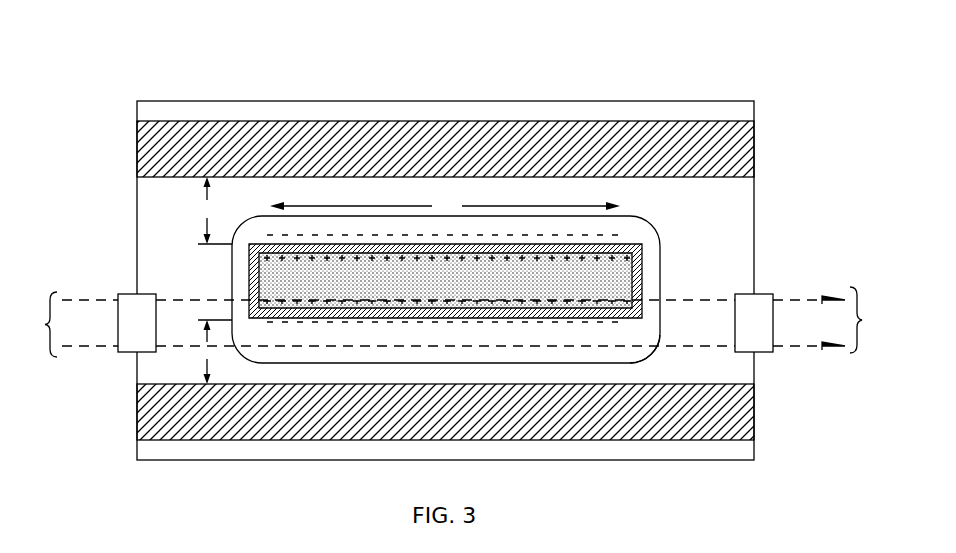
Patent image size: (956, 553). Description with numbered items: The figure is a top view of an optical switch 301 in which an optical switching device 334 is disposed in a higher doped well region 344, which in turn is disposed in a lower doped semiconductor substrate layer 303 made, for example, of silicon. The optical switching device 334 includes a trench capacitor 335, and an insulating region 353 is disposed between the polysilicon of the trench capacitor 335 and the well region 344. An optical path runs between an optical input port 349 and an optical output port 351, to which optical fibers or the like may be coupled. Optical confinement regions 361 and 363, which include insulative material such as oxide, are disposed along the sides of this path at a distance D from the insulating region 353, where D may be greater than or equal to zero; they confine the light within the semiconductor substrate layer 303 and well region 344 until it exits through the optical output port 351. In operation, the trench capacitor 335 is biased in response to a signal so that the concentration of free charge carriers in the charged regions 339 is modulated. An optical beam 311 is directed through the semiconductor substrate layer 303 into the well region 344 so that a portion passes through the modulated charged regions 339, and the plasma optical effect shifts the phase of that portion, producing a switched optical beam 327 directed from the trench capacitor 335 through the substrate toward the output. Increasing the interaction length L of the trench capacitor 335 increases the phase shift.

The optical switch 301 is at (674, 53).
The semiconductor substrate layer 303 is at (754, 210).
The optical beam 311 is at (63, 324).
The switched optical beam 327 is at (842, 320).
The optical switching device 334 is at (622, 224).
The trench capacitor 335 is at (642, 287).
The charged regions 339 is at (250, 322).
The well region 344 is at (650, 348).
The optical input port 349 is at (128, 294).
The optical output port 351 is at (757, 294).
The insulating region 353 is at (642, 243).
The optical confinement region 361 is at (754, 155).
The optical confinement region 363 is at (754, 415).